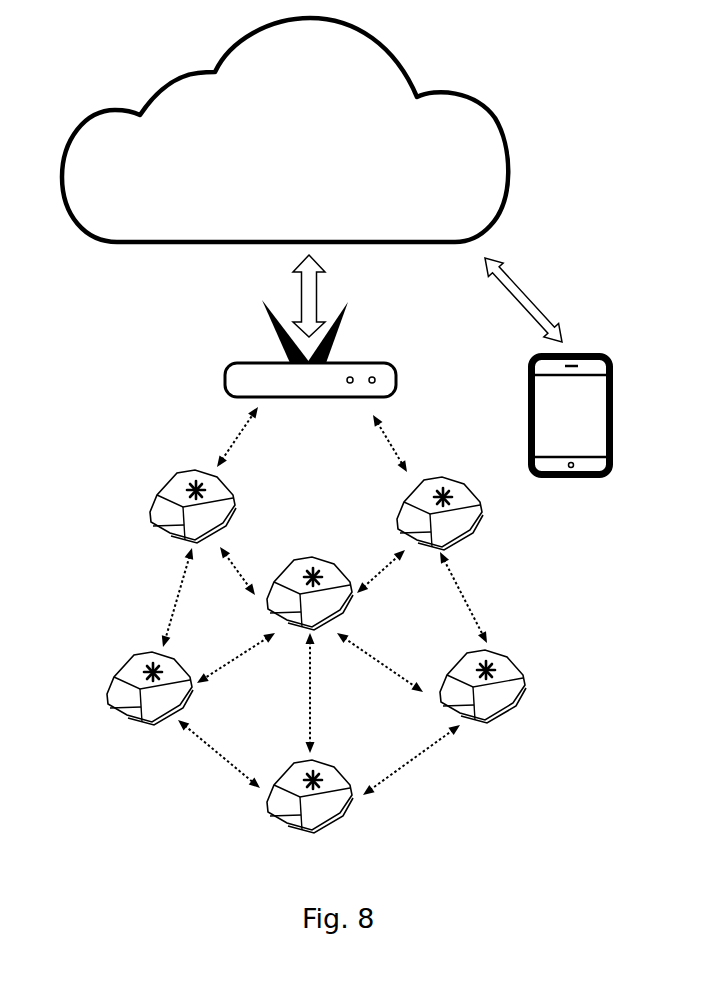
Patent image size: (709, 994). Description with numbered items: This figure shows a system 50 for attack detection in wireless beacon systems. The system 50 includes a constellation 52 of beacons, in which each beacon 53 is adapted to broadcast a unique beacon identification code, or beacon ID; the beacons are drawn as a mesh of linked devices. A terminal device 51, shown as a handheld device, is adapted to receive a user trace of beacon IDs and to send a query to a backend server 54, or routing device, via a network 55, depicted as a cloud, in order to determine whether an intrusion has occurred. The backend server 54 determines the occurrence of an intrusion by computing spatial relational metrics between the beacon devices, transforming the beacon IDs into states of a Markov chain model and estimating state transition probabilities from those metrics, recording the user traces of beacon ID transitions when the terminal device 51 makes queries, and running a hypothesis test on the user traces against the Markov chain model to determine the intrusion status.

The system 50 is at (567, 625).
The terminal device 51 is at (602, 412).
The constellation of beacons 52 is at (163, 585).
The beacon 53 is at (180, 475).
The backend server 54 is at (250, 363).
The network 55 is at (455, 113).